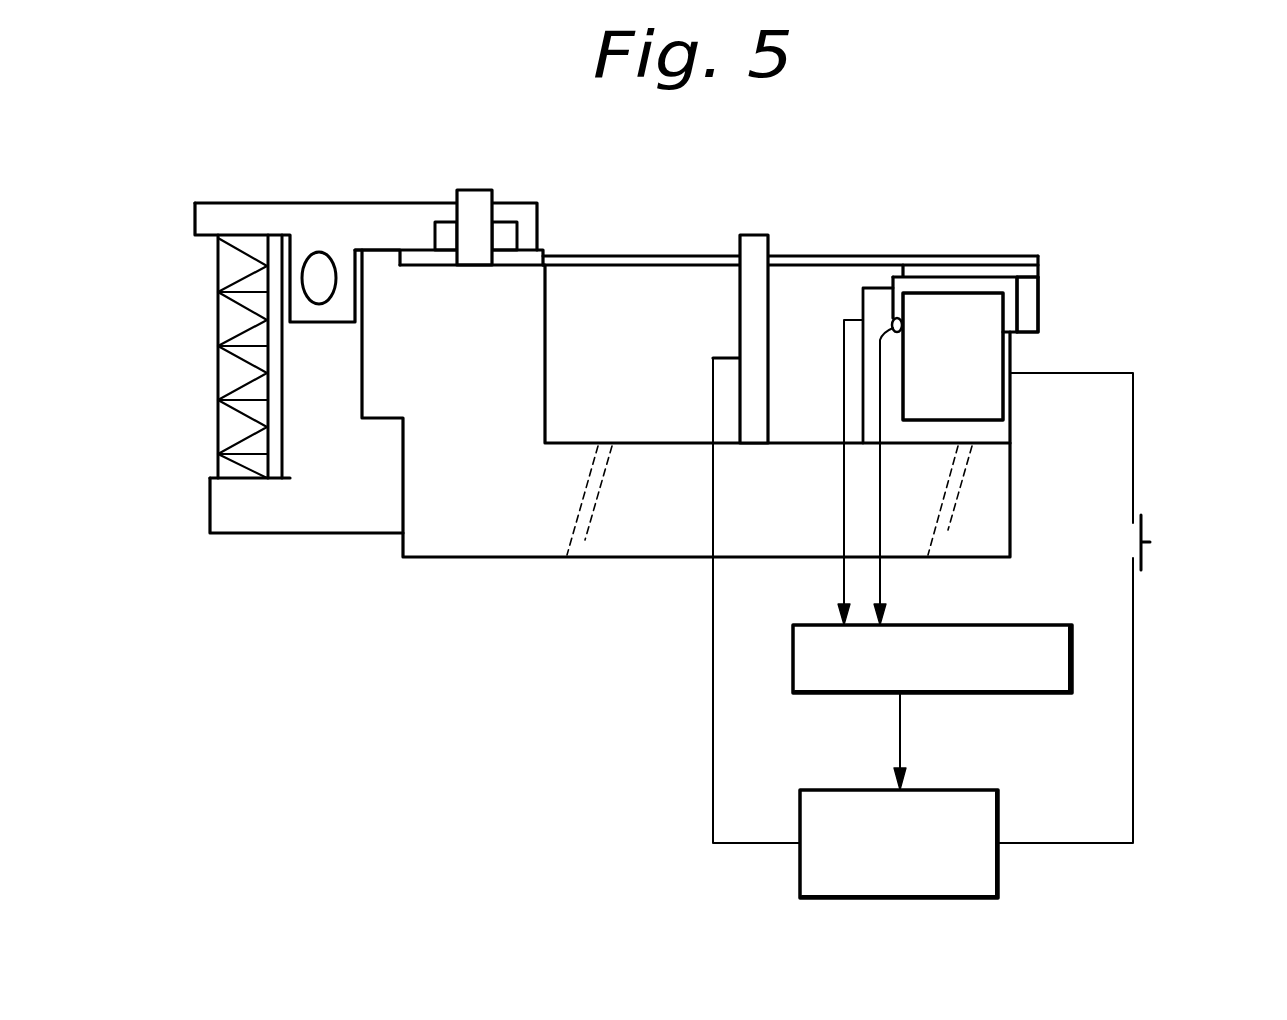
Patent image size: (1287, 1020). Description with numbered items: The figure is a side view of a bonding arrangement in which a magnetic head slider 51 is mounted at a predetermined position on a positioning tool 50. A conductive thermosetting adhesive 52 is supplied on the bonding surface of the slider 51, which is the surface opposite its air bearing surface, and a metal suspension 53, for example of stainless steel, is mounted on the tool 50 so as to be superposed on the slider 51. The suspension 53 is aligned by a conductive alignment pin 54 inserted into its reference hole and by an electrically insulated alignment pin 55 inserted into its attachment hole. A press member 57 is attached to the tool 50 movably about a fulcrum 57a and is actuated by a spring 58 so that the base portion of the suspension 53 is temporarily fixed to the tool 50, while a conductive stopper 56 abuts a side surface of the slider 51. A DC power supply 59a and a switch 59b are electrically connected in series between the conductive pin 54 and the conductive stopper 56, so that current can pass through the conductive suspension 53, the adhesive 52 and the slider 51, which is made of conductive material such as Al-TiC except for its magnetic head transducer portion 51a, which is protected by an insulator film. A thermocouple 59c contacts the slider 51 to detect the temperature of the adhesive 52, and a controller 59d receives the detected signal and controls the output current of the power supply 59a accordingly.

The positioning tool 50 is at (613, 545).
The magnetic head slider 51 is at (903, 283).
The magnetic head transducer portion 51a is at (1031, 292).
The conductive thermosetting adhesive 52 is at (943, 268).
The suspension 53 is at (657, 252).
The conductive alignment pin 54 is at (752, 245).
The electrically insulated alignment pin 55 is at (478, 200).
The conductive stopper 56 is at (992, 356).
The press member 57 is at (281, 212).
The fulcrum 57a is at (322, 265).
The spring 58 is at (230, 318).
The DC power supply 59a is at (952, 788).
The switch 59b is at (1148, 528).
The thermocouple 59c is at (892, 321).
The controller 59d is at (964, 623).